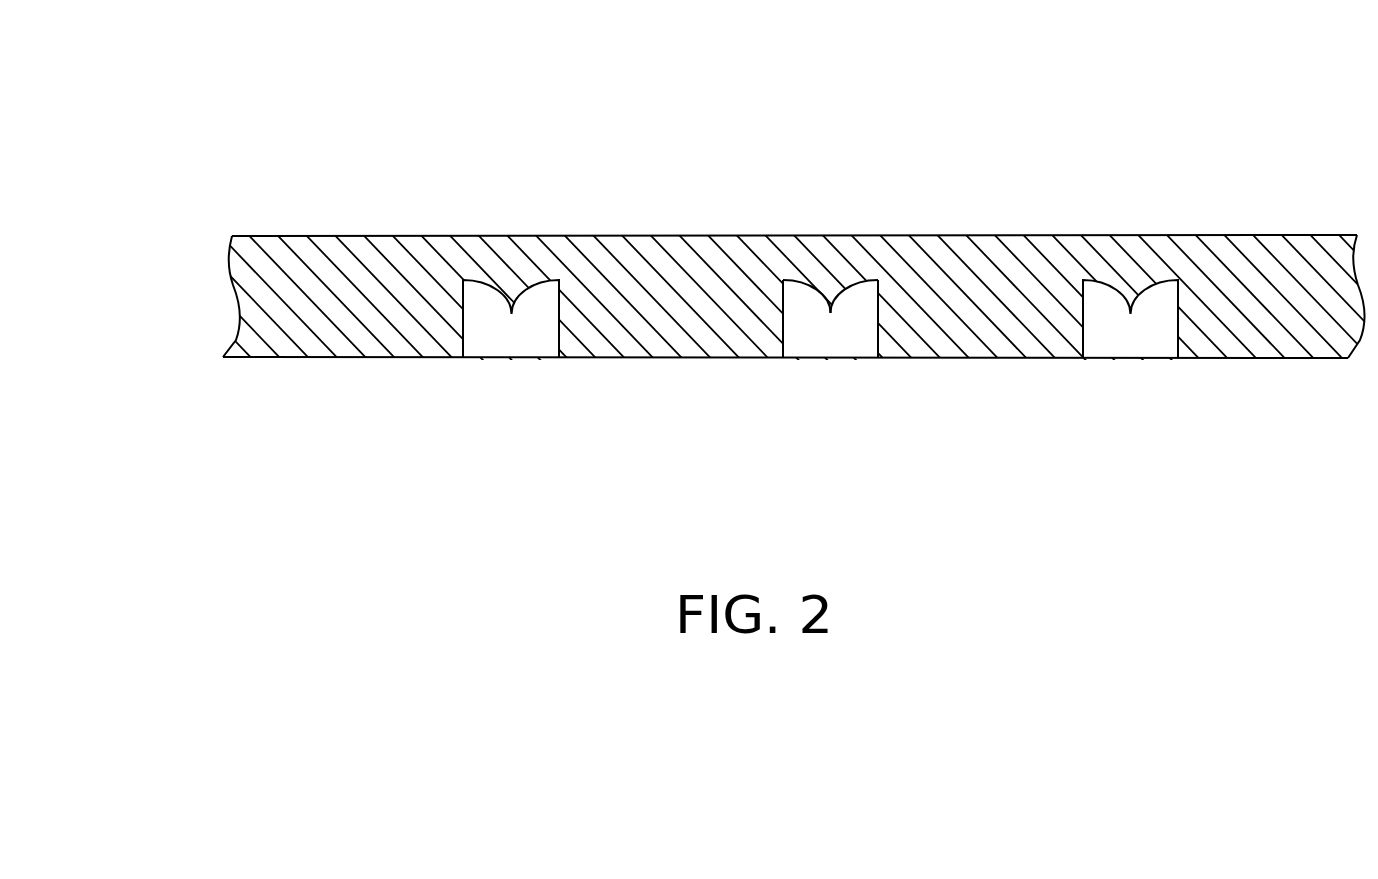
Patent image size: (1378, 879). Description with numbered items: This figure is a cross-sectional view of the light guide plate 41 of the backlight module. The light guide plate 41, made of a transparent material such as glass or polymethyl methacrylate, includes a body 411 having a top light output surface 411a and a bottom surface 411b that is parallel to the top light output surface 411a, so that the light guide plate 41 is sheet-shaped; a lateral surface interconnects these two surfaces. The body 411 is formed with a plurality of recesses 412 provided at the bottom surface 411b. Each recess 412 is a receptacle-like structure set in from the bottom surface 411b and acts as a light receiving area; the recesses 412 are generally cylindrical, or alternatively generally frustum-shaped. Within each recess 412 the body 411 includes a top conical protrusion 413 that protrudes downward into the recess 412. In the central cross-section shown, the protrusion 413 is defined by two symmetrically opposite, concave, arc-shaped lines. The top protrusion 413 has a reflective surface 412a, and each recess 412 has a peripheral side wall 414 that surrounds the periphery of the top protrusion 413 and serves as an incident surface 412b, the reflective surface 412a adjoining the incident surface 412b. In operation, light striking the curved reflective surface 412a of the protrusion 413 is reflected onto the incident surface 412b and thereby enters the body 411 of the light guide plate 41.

The light guide plate 41 is at (290, 52).
The body 411 is at (141, 168).
The top light output surface 411a is at (318, 233).
The bottom surface 411b is at (337, 357).
The recess 412 is at (503, 352).
The reflective surface 412a is at (845, 296).
The incident surface 412b is at (877, 298).
The top conical protrusion 413 is at (817, 290).
The peripheral side wall 414 is at (783, 320).